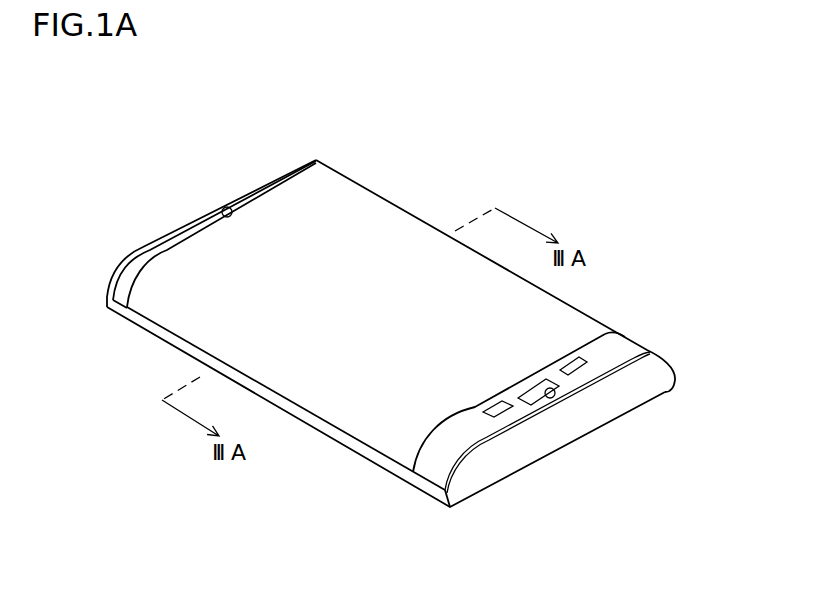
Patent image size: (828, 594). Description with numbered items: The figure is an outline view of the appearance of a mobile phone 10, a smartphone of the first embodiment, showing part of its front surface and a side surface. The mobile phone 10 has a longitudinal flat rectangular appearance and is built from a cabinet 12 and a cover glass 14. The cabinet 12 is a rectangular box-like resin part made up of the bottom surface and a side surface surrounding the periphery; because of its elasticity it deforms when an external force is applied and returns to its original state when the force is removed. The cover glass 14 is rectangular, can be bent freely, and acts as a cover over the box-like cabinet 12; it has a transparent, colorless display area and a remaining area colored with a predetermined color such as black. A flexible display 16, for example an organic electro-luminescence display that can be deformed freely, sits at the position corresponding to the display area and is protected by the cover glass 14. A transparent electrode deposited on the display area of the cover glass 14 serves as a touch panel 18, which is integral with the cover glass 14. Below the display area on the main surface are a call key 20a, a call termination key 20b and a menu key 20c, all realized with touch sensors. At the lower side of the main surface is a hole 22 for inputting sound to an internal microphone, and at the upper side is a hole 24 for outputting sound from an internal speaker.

The mobile phone 10 is at (152, 125).
The cabinet 12 is at (380, 466).
The cover glass 14 is at (318, 412).
The flexible display 16 is at (382, 228).
The touch panel 18 is at (548, 313).
The call key 20a is at (498, 410).
The call termination key 20b is at (597, 347).
The menu key 20c is at (560, 389).
The hole for inputting sound to a microphone 22 is at (550, 398).
The hole for outputting sound from a speaker 24 is at (231, 208).